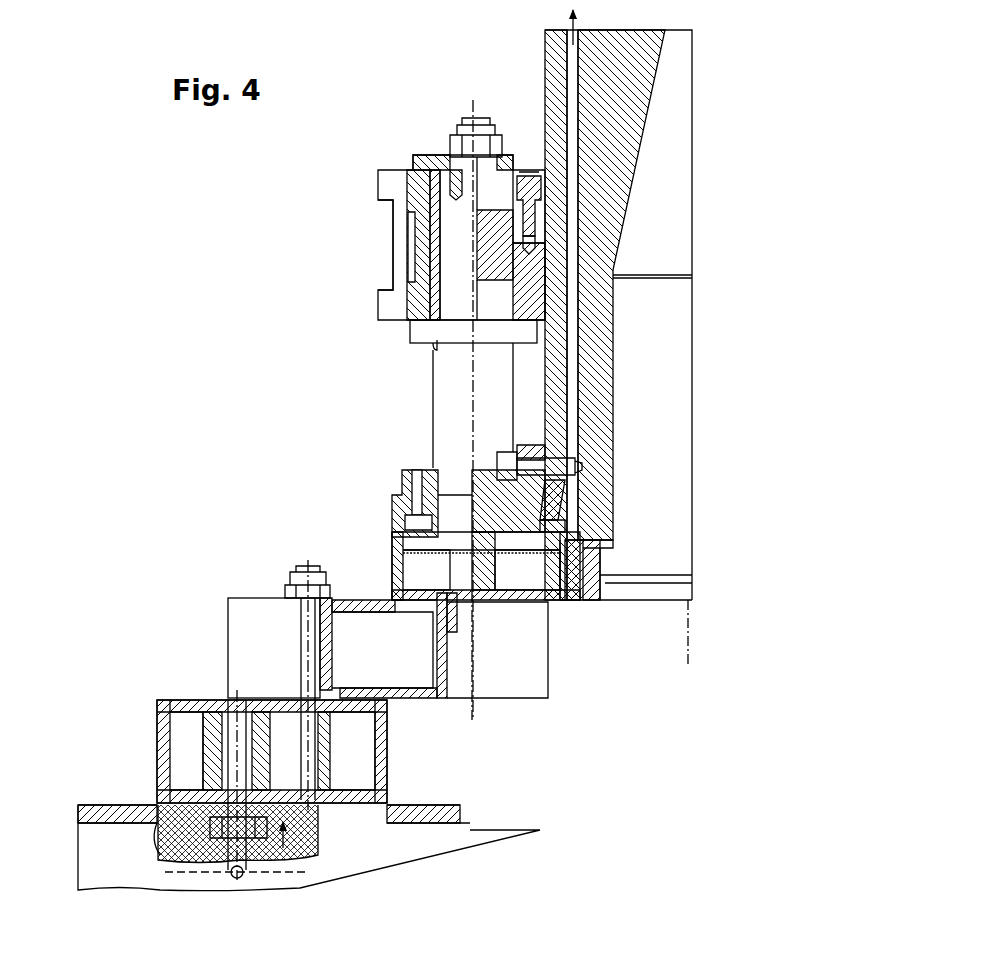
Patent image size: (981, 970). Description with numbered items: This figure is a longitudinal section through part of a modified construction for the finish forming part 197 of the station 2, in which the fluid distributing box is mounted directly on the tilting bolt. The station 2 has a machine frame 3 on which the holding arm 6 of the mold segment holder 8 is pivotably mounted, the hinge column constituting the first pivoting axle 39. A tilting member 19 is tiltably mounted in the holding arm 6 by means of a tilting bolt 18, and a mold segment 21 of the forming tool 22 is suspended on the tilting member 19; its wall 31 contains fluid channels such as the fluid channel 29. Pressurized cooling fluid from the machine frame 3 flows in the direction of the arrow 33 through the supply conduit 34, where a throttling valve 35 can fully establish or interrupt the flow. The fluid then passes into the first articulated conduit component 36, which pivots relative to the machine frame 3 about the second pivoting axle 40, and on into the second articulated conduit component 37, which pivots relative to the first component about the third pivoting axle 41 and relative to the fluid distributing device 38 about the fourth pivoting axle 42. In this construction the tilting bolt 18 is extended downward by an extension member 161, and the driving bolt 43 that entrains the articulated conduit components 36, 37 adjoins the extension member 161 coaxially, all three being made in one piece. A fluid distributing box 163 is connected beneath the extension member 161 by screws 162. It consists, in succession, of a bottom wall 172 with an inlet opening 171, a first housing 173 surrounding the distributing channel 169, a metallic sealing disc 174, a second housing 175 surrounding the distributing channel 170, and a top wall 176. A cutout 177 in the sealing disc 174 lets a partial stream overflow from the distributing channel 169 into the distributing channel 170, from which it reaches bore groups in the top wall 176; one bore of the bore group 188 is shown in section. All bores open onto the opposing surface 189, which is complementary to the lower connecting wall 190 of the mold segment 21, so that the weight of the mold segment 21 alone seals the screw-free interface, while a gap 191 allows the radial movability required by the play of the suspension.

The station 2 is at (262, 372).
The machine frame 3 is at (92, 880).
The holding arm 6 is at (378, 178).
The mold segment holder 8 is at (388, 226).
The tilting bolt 18 is at (470, 120).
The tilting member 19 is at (428, 252).
The mold segment 21 is at (638, 28).
The forming tool 22 is at (541, 42).
The fluid channel 29 is at (577, 160).
The wall 31 is at (635, 115).
The arrow 33 is at (288, 848).
The supply conduit 34 is at (296, 840).
The throttling valve 35 is at (272, 878).
The first articulated conduit component 36 is at (157, 722).
The second articulated conduit component 37 is at (228, 650).
The fluid distributing device 38 is at (558, 608).
The first pivoting axle 39 is at (680, 638).
The second pivoting axle 40 is at (228, 748).
The third pivoting axle 41 is at (322, 750).
The fourth pivoting axle 42 is at (472, 695).
The driving bolt 43 is at (460, 622).
The extension member 161 is at (433, 395).
The screws 162 is at (416, 468).
The fluid distributing box 163 is at (388, 566).
The distributing channel 169 is at (403, 575).
The distributing channel 170 is at (410, 548).
The inlet opening 171 is at (406, 612).
The bottom wall 172 is at (505, 598).
The first housing 173 is at (398, 551).
The sealing disc 174 is at (505, 553).
The second housing 175 is at (398, 525).
The top wall 176 is at (398, 503).
The cutout 177 is at (405, 551).
The bore group 188 is at (558, 522).
The opposing surface 189 is at (562, 492).
The connecting wall 190 is at (520, 530).
The gap 191 is at (572, 598).
The finish forming part 197 is at (268, 397).